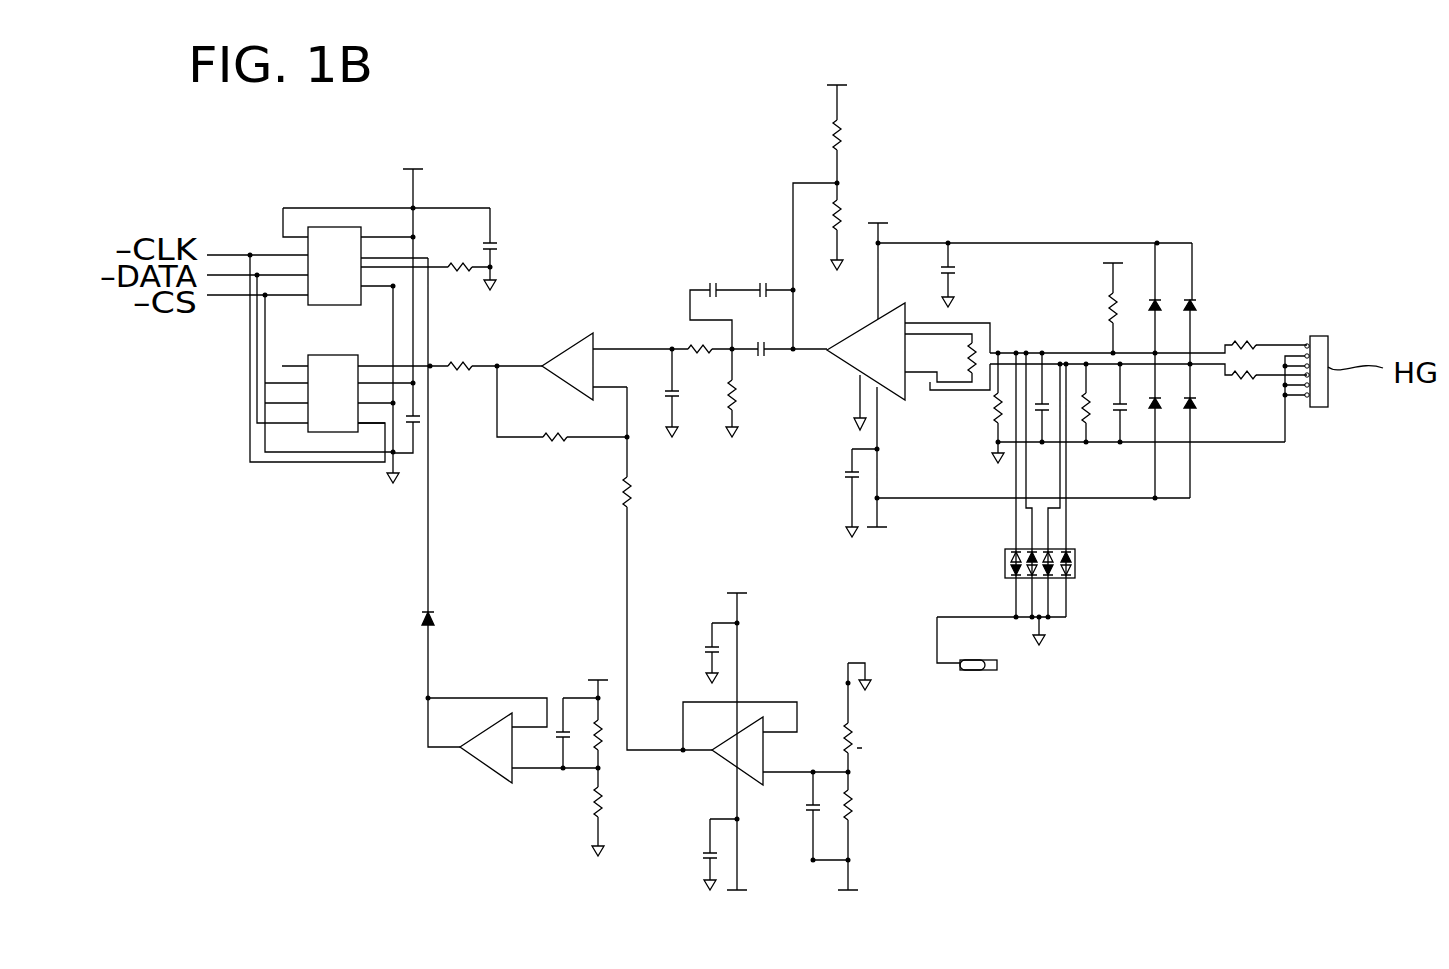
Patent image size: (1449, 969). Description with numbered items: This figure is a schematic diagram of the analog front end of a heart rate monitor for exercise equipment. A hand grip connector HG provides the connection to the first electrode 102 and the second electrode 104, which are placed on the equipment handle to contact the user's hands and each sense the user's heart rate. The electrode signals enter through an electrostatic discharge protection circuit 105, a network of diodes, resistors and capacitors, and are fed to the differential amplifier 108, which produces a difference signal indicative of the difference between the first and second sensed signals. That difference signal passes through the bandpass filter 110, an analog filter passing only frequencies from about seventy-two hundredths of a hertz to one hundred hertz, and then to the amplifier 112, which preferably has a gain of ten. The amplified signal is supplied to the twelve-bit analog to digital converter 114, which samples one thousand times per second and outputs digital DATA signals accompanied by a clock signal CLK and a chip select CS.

The first electrode 102 is at (1307, 342).
The second electrode 104 is at (1300, 398).
The ESD protection circuit 105 is at (1103, 210).
The differential amplifier 108 is at (848, 366).
The bandpass filter 110 is at (726, 272).
The amplifier 112 is at (562, 352).
The analog to digital converter 114 is at (350, 348).